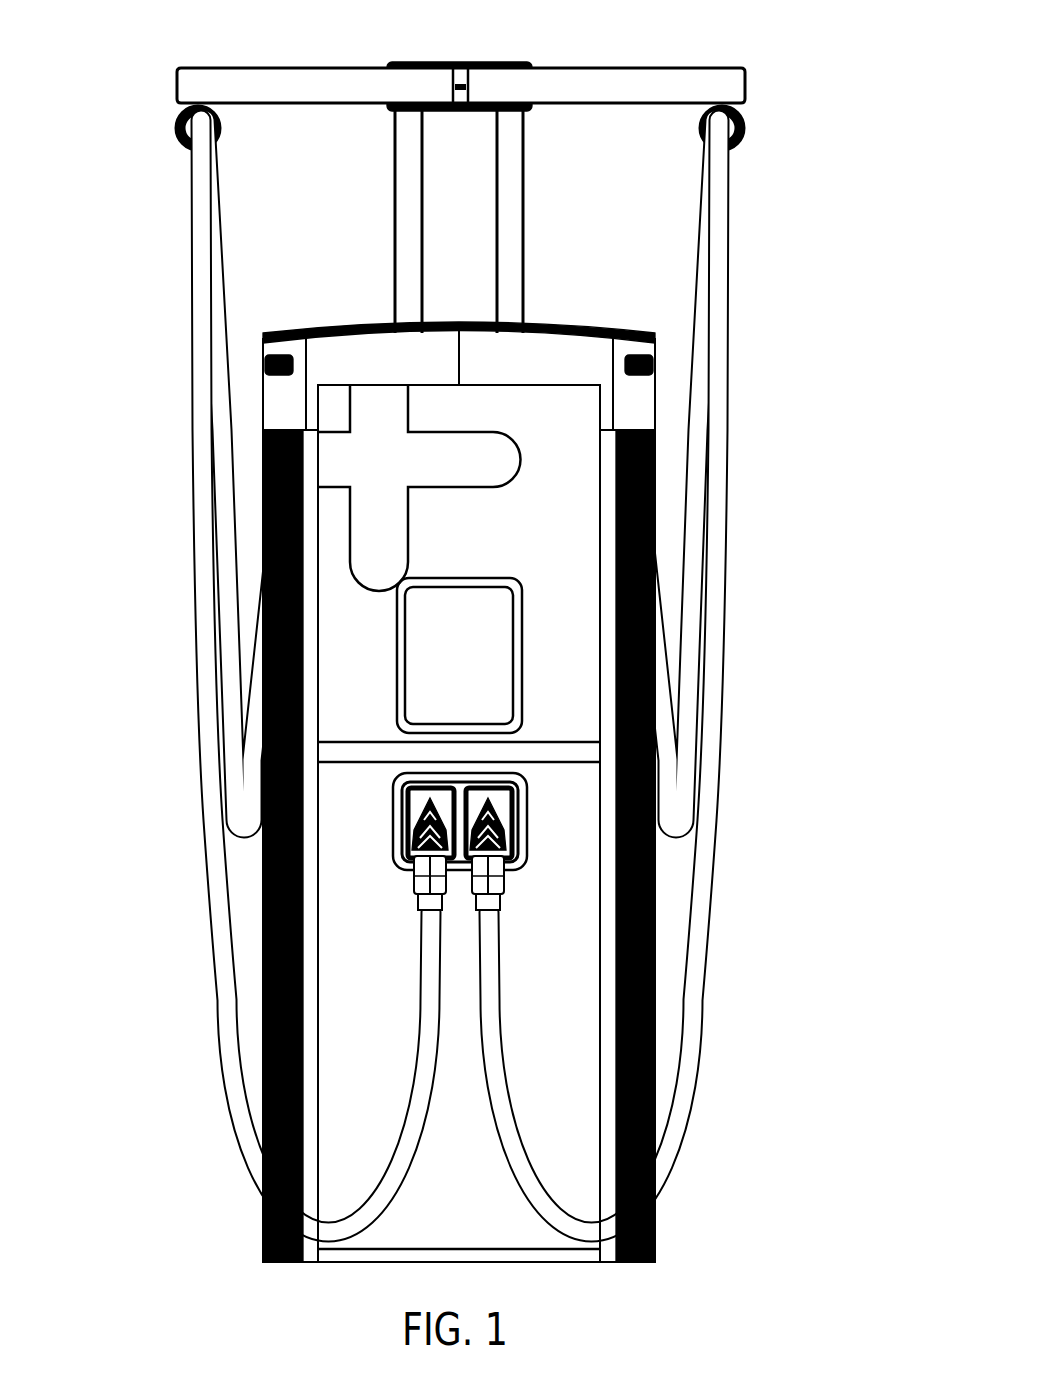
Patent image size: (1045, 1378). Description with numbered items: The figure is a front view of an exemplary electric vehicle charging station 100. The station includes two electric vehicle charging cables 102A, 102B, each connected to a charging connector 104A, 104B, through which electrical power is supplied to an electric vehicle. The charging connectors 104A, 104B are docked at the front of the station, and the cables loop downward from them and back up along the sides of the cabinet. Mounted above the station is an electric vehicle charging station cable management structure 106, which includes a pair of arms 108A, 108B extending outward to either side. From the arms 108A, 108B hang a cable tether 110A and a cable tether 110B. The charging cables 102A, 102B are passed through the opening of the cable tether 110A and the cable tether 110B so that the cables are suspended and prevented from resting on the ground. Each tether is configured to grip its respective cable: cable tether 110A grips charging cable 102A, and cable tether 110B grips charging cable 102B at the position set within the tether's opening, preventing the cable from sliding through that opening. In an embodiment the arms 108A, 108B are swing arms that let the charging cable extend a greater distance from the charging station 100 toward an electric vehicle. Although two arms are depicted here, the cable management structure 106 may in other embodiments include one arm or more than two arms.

The electric vehicle charging station 100 is at (264, 403).
The electric vehicle charging cable 102A is at (192, 308).
The electric vehicle charging cable 102B is at (734, 363).
The charging connector 104A is at (411, 876).
The charging connector 104B is at (505, 877).
The electric vehicle charging station cable management structure 106 is at (453, 63).
The arm 108A is at (247, 63).
The arm 108B is at (662, 65).
The cable tether 110A is at (184, 148).
The cable tether 110B is at (703, 147).